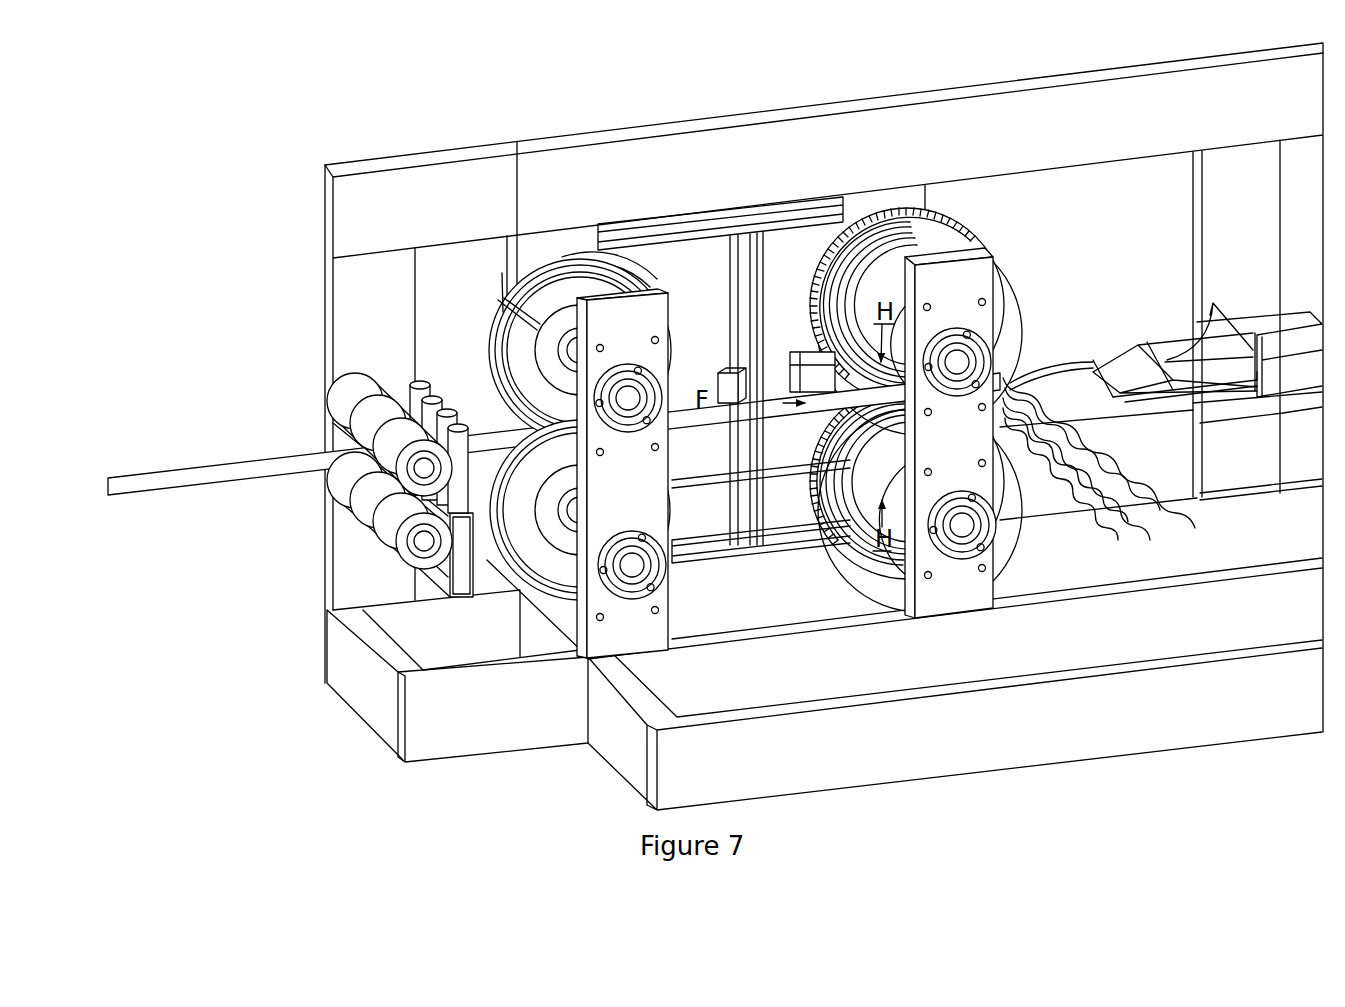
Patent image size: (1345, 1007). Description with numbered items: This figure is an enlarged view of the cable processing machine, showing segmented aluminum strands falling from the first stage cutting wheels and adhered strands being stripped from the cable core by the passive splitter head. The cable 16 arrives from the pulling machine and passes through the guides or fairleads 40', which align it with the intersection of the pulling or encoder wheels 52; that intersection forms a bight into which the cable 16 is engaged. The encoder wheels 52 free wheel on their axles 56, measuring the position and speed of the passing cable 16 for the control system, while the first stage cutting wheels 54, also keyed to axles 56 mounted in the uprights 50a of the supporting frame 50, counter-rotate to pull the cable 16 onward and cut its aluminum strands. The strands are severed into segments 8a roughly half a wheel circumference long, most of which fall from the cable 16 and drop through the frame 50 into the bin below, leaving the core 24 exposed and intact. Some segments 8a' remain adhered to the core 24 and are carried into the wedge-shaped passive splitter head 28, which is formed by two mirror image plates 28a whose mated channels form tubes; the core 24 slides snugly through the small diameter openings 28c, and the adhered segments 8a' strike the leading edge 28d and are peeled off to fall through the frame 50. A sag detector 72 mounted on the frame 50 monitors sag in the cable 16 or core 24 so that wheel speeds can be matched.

The supporting frame 50 is at (982, 86).
The pulling or encoder wheels 52 is at (619, 248).
The first stage cutting wheels 54 is at (938, 224).
The uprights 50a is at (725, 289).
The sag detector 72 is at (732, 374).
The axles 56 is at (636, 402).
The cable 16 is at (685, 413).
The guides or fairleads 40' is at (368, 441).
The strand segments 8a is at (1099, 478).
The adhered strand segments 8a' is at (1067, 316).
The core 24 is at (1093, 358).
The small diameter opening 28c is at (1167, 347).
The leading edge 28d is at (1128, 391).
The mirror image plates 28a is at (1172, 342).
The passive splitter head 28 is at (1222, 300).